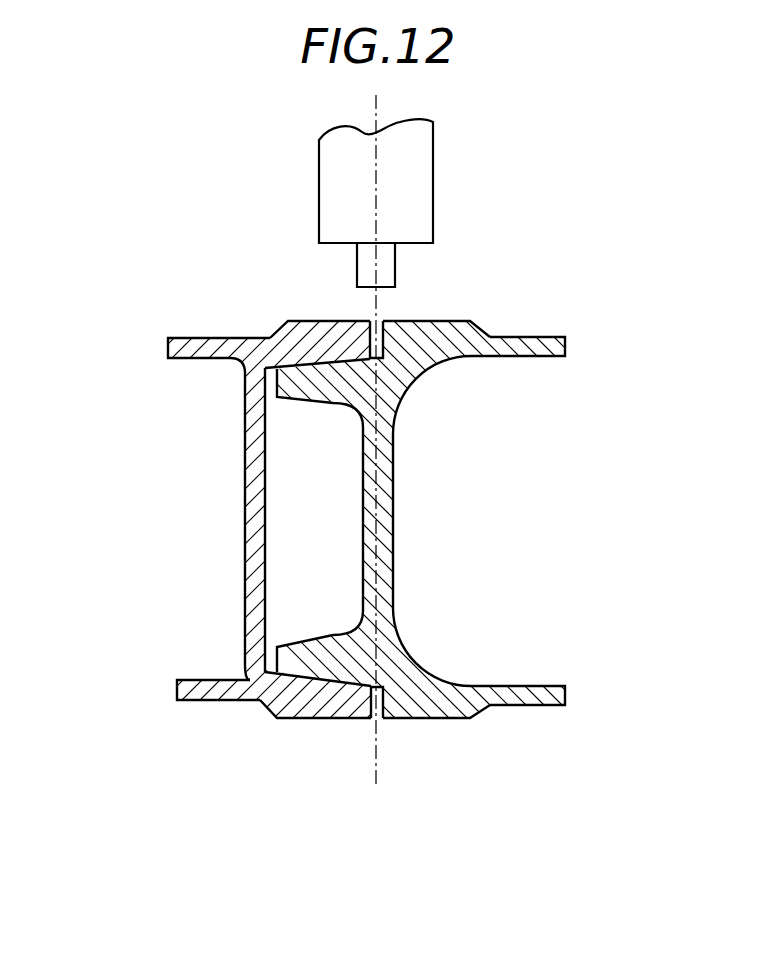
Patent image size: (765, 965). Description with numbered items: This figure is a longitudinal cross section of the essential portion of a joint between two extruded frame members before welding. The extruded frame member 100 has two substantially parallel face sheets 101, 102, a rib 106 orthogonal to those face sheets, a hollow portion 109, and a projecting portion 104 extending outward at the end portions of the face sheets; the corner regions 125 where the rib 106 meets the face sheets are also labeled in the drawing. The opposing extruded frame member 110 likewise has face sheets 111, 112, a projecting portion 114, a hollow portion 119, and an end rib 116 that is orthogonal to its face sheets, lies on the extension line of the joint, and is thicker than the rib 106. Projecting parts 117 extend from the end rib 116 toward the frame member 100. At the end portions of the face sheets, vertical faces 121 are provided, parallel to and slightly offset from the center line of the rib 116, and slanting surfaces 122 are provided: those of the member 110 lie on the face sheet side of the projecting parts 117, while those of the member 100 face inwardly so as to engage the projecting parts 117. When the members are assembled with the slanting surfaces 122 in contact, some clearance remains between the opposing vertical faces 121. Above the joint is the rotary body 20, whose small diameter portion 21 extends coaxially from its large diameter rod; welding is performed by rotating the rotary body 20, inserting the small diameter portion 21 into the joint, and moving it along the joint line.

The rotary body 20 is at (433, 178).
The small diameter portion 21 is at (395, 265).
The extruded frame member 100 is at (175, 300).
The face sheet 101 is at (215, 335).
The face sheet 102 is at (195, 700).
The projecting portion 104 is at (300, 320).
The rib 106 is at (265, 510).
The hollow portion 109 is at (200, 575).
The extruded frame member 110 is at (543, 248).
The face sheet 111 is at (555, 338).
The face sheet 112 is at (520, 705).
The projecting portion 114 is at (470, 320).
The end rib 116 is at (393, 487).
The projecting part 117 is at (330, 400).
The hollow portion 119 is at (455, 560).
The vertical face 121 is at (370, 322).
The slanting surface 122 is at (300, 350).
The fillet corner 125 is at (245, 378).